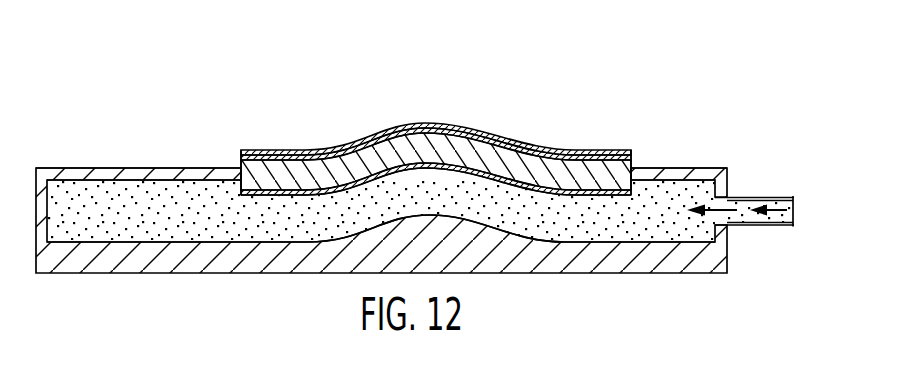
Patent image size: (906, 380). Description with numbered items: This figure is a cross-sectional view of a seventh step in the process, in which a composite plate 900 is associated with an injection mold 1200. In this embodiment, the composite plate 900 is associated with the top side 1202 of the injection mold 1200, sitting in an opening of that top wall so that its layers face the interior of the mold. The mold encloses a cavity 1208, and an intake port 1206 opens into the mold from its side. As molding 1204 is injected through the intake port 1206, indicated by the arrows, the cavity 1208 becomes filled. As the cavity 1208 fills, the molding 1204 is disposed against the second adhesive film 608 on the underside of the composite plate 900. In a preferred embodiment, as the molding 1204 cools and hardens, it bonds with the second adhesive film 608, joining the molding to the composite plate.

The injection mold 1200 is at (727, 249).
The top side 1202 is at (141, 167).
The molding 1204 is at (670, 196).
The intake port 1206 is at (768, 198).
The cavity 1208 is at (132, 233).
The composite plate 900 is at (445, 119).
The second adhesive film 608 is at (566, 160).